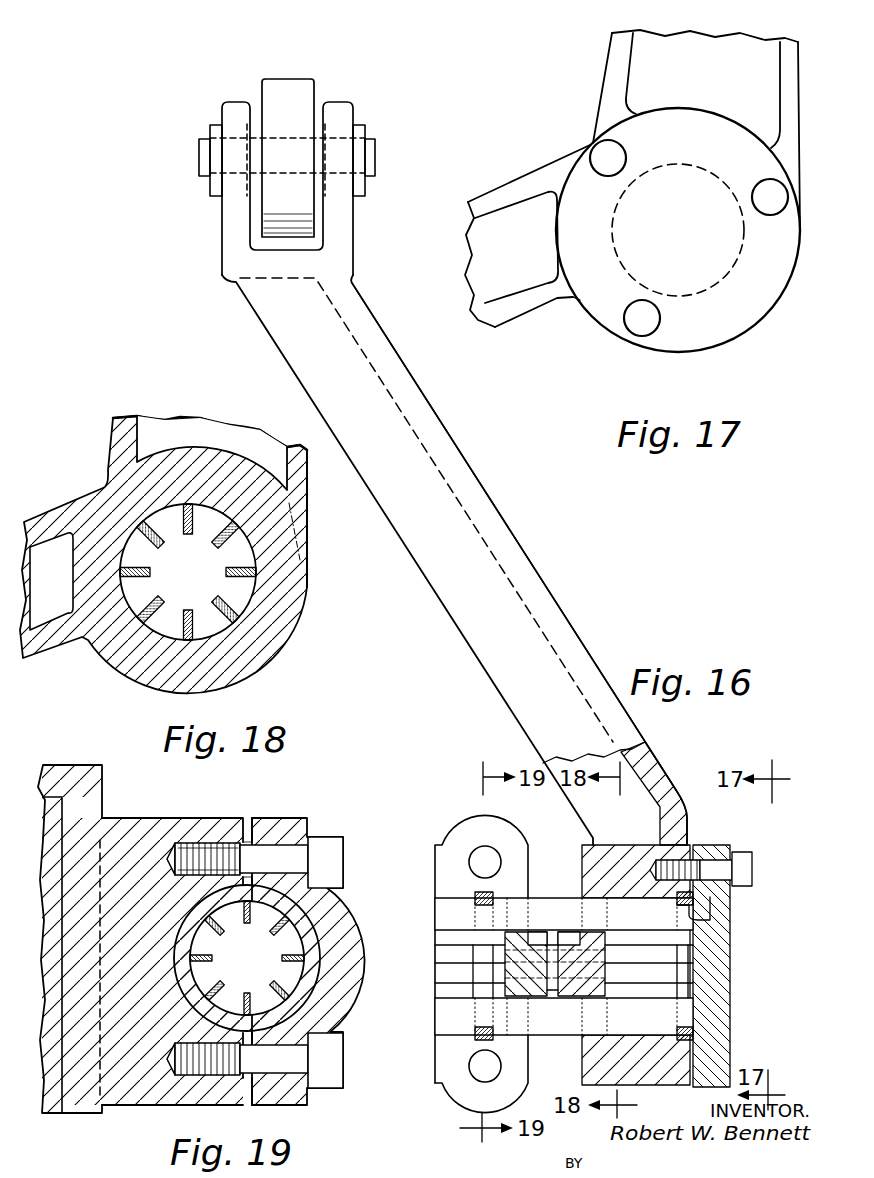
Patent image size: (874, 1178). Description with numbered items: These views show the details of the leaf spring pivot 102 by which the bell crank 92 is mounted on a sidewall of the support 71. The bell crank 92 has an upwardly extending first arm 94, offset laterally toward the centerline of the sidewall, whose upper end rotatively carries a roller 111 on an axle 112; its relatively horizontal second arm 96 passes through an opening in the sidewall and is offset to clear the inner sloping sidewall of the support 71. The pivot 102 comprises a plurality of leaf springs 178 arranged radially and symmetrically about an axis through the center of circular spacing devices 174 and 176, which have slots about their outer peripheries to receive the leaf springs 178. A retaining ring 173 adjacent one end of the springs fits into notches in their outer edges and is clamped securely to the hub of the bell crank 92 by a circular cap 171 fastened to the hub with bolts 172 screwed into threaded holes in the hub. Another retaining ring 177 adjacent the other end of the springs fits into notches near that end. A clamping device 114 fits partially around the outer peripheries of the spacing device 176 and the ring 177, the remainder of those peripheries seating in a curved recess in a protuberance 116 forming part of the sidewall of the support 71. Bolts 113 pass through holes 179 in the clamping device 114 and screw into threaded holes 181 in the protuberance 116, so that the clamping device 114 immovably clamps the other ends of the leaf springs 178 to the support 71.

In FIG. 19, the support 71 is at (68, 762).
In FIG. 16, the bell crank 92 is at (525, 542).
In FIG. 17, the bell crank 92 is at (804, 87).
In FIG. 18, the bell crank 92 is at (308, 449).
In FIG. 16, the first arm 94 is at (432, 430).
In FIG. 17, the first arm 94 is at (790, 110).
In FIG. 18, the first arm 94 is at (305, 487).
In FIG. 17, the second arm 96 is at (505, 200).
In FIG. 18, the second arm 96 is at (40, 510).
In FIG. 16, the leaf spring pivot 102 is at (688, 1088).
In FIG. 17, the leaf spring pivot 102 is at (598, 329).
In FIG. 18, the leaf spring pivot 102 is at (108, 674).
In FIG. 16, the roller 111 is at (288, 88).
In FIG. 16, the axle 112 is at (372, 160).
In FIG. 19, the bolt 113 is at (338, 852).
In FIG. 16, the clamping device 114 is at (458, 835).
In FIG. 19, the clamping device 114 is at (355, 960).
In FIG. 19, the protuberance 116 is at (124, 820).
In FIG. 16, the circular cap 171 is at (731, 898).
In FIG. 17, the circular cap 171 is at (590, 298).
In FIG. 16, the bolt 172 is at (753, 868).
In FIG. 17, the bolt 172 is at (603, 155).
In FIG. 16, the retaining ring 173 is at (712, 922).
In FIG. 16, the spacing device 174 is at (572, 982).
In FIG. 18, the spacing device 174 is at (242, 555).
In FIG. 16, the spacing device 176 is at (540, 947).
In FIG. 19, the spacing device 176 is at (283, 977).
In FIG. 16, the retaining ring 177 is at (477, 897).
In FIG. 19, the retaining ring 177 is at (303, 927).
In FIG. 16, the leaf spring 178 is at (535, 905).
In FIG. 18, the leaf spring 178 is at (192, 524).
In FIG. 19, the leaf spring 178 is at (292, 953).
In FIG. 16, the hole 179 is at (491, 850).
In FIG. 19, the hole 179 is at (275, 846).
In FIG. 19, the threaded hole 181 is at (197, 847).